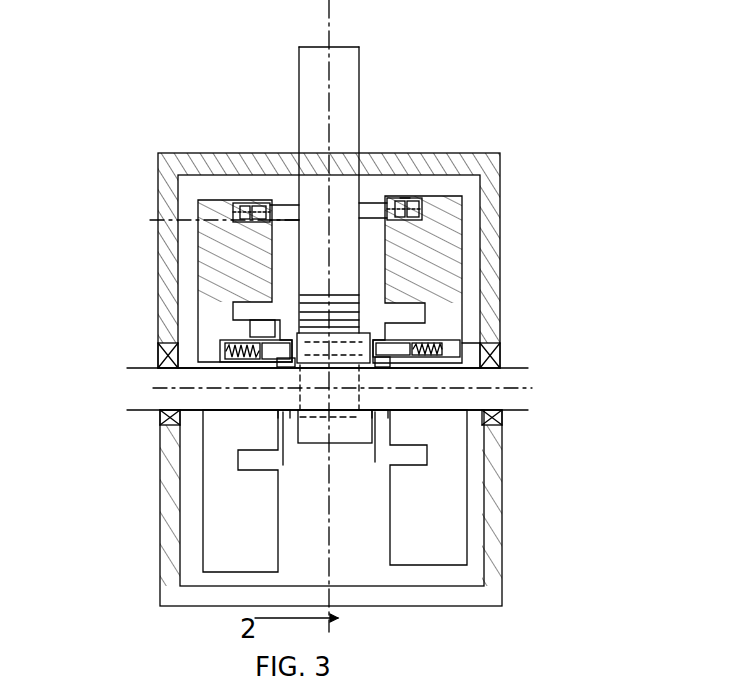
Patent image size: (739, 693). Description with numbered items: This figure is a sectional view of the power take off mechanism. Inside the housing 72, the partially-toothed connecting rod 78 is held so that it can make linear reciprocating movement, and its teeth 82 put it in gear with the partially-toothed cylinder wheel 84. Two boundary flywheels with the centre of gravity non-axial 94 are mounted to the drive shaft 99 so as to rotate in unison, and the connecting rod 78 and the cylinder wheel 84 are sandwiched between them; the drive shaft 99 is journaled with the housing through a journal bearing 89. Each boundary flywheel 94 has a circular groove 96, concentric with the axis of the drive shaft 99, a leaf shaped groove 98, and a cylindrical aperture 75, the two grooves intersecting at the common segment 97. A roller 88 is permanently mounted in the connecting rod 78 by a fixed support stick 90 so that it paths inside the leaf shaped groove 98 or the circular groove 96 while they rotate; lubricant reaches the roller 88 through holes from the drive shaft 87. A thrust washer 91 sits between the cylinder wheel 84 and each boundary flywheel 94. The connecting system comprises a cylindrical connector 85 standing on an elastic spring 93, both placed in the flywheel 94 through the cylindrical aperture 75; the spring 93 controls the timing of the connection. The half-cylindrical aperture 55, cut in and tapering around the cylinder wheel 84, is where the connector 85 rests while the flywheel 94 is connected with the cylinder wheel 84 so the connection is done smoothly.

The half-cylindrical aperture 55 is at (160, 343).
The housing 72 is at (500, 173).
The cylindrical aperture 75 is at (497, 363).
The partially-toothed connecting rod 78 is at (343, 85).
The teeth 82 is at (359, 296).
The partially-toothed cylinder wheel 84 is at (334, 443).
The cylindrical connector 85 is at (160, 368).
The drive shaft 87 is at (402, 200).
The roller 88 is at (255, 200).
The journal bearing 89 is at (165, 412).
The fixed support stick 90 is at (285, 213).
The thrust washer 91 is at (335, 441).
The elastic spring 93 is at (465, 342).
The boundary flywheel with the centre of gravity non-axial 94 is at (200, 272).
The circular groove 96 is at (228, 316).
The common segment 97 is at (238, 458).
The leaf shaped groove 98 is at (197, 215).
The drive shaft 99 is at (473, 398).